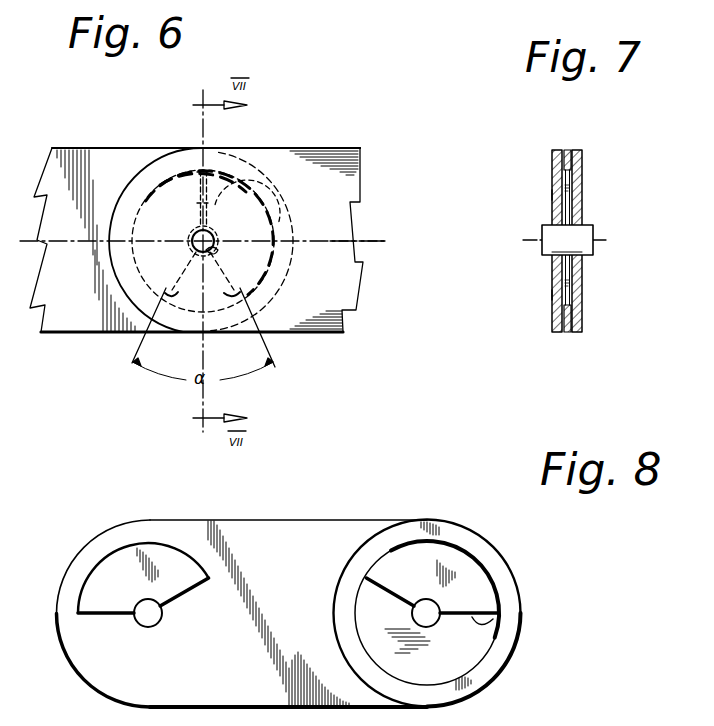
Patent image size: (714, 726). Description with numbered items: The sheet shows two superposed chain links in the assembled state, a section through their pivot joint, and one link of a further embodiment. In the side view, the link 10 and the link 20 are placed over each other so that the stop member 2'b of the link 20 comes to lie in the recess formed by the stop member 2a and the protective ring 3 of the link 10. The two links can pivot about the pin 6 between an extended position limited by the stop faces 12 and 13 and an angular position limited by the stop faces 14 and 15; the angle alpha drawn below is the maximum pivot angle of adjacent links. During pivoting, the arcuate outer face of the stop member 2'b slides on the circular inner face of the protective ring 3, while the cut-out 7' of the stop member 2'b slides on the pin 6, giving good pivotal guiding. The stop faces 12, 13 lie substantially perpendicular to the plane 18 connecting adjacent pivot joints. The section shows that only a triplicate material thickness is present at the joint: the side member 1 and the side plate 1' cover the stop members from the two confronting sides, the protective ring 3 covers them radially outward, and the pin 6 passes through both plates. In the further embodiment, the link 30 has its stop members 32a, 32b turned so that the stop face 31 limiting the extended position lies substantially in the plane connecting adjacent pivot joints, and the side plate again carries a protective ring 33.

In FIG. 6, the link 10 is at (78, 144).
In FIG. 6, the stop member 2a is at (153, 193).
In FIG. 6, the stop face 13 is at (190, 170).
In FIG. 6, the stop face 12 is at (235, 175).
In FIG. 6, the pin 6 is at (211, 229).
In FIG. 7, the pin 6 is at (590, 247).
In FIG. 6, the link 20 is at (338, 142).
In FIG. 6, the stop member 2'b is at (310, 194).
In FIG. 7, the stop member 2'b is at (521, 202).
In FIG. 6, the plane connecting adjacent pivot joints 18 is at (383, 240).
In FIG. 6, the cut-out 7' is at (300, 269).
In FIG. 6, the stop face 14 is at (163, 292).
In FIG. 6, the stop face 15 is at (240, 293).
In FIG. 7, the stop face 15 is at (557, 297).
In FIG. 7, the side member 1 is at (529, 237).
In FIG. 7, the side plate 1' is at (600, 235).
In FIG. 7, the protective ring 3 is at (567, 150).
In FIG. 8, the link 30 is at (283, 520).
In FIG. 8, the stop face 31 is at (482, 623).
In FIG. 8, the stop member 32a is at (477, 597).
In FIG. 8, the stop member 32b is at (120, 565).
In FIG. 8, the protective ring 33 is at (475, 548).